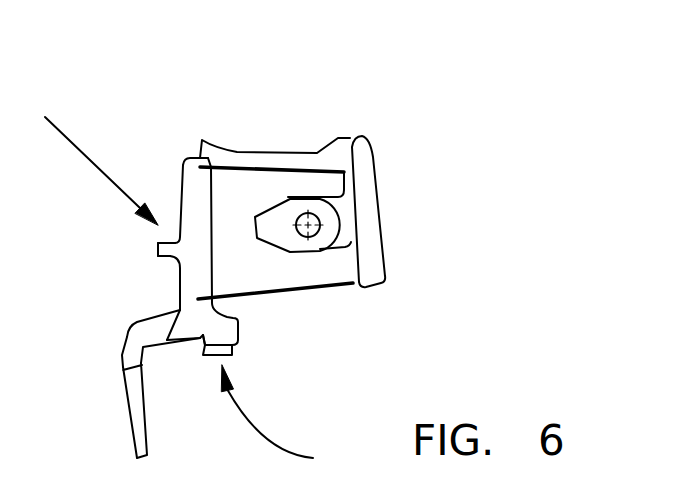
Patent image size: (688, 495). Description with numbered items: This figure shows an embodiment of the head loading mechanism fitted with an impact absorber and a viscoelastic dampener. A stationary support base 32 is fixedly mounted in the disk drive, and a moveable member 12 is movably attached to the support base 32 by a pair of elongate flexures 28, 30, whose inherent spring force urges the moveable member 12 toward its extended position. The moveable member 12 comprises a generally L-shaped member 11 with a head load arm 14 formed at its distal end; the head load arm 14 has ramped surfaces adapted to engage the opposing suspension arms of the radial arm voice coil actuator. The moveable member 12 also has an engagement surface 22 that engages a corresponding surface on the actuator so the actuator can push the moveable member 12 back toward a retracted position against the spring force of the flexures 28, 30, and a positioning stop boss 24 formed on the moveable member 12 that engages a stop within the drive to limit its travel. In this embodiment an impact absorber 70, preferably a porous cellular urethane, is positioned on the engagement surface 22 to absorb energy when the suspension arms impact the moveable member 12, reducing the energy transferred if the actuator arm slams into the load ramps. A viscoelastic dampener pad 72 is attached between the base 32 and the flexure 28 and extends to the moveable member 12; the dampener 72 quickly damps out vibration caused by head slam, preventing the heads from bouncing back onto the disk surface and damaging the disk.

The L-shaped member 11 is at (128, 338).
The moveable member 12 is at (191, 188).
The first head load arm 14 is at (134, 405).
The engagement surface 22 is at (196, 337).
The positioning stop boss 24 is at (155, 246).
The elongate flexure 28 is at (273, 174).
The elongate flexure 30 is at (298, 290).
The stationary support base 32 is at (383, 205).
The impact absorber 70 is at (233, 356).
The viscoelastic dampener pad 72 is at (258, 152).